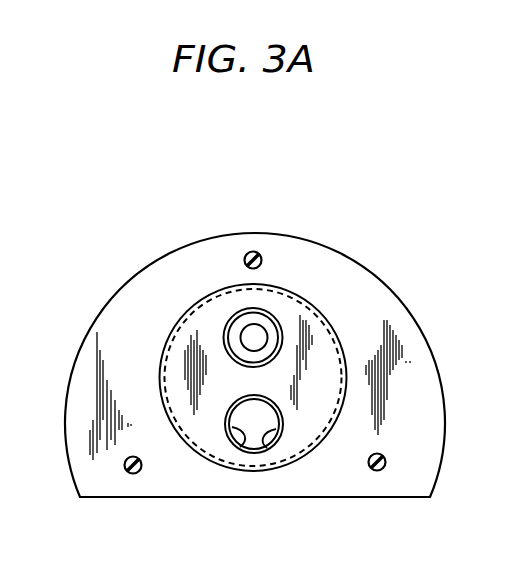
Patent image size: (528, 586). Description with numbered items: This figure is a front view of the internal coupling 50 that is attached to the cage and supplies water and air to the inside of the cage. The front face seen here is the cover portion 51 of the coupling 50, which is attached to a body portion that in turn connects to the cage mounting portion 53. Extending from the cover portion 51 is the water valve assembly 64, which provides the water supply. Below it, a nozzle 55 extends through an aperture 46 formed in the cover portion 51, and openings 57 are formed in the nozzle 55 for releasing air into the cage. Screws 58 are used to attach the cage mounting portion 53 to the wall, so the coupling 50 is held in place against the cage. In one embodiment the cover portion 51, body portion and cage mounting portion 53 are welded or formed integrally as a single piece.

The internal coupling 50 is at (165, 196).
The cover portion 51 is at (325, 338).
The cage mounting portion 53 is at (397, 346).
The nozzle 55 is at (262, 423).
The aperture 46 is at (231, 428).
The openings 57 is at (238, 437).
The screws 58 is at (384, 459).
The water valve assembly 64 is at (270, 320).